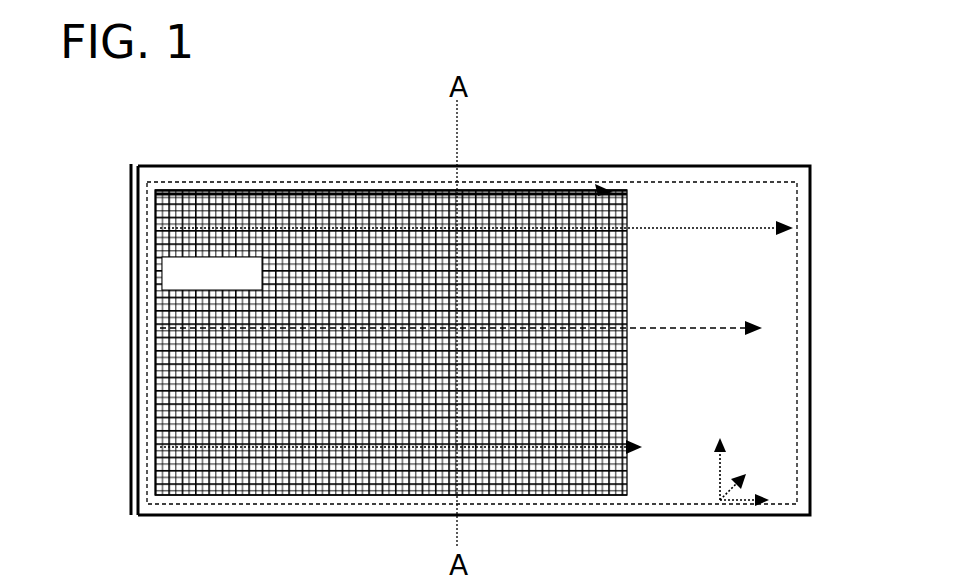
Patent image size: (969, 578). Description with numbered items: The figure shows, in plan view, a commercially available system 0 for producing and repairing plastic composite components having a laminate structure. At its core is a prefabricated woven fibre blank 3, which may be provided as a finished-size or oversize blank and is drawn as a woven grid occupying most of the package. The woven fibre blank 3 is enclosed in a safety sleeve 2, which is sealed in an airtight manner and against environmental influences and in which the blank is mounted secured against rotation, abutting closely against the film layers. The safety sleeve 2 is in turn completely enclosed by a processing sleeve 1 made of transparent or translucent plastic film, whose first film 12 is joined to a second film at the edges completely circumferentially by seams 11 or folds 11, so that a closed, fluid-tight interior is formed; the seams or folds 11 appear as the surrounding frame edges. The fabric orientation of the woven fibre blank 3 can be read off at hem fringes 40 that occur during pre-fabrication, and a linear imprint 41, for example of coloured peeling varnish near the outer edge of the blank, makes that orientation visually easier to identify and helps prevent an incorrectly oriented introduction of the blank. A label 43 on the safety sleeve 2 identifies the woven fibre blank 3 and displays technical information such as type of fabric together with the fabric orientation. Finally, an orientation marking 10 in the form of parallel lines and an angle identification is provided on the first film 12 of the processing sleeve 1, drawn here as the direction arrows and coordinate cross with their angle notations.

The system 0 is at (680, 144).
The processing sleeve 1 is at (773, 166).
The safety sleeve 2 is at (627, 267).
The woven fibre blank 3 is at (391, 339).
The orientation marking 10 is at (652, 443).
The seams or folds 11 is at (275, 182).
The first film 12 is at (728, 348).
The hem fringes 40 is at (227, 487).
The linear imprint 41 is at (185, 200).
The label 43 is at (228, 286).